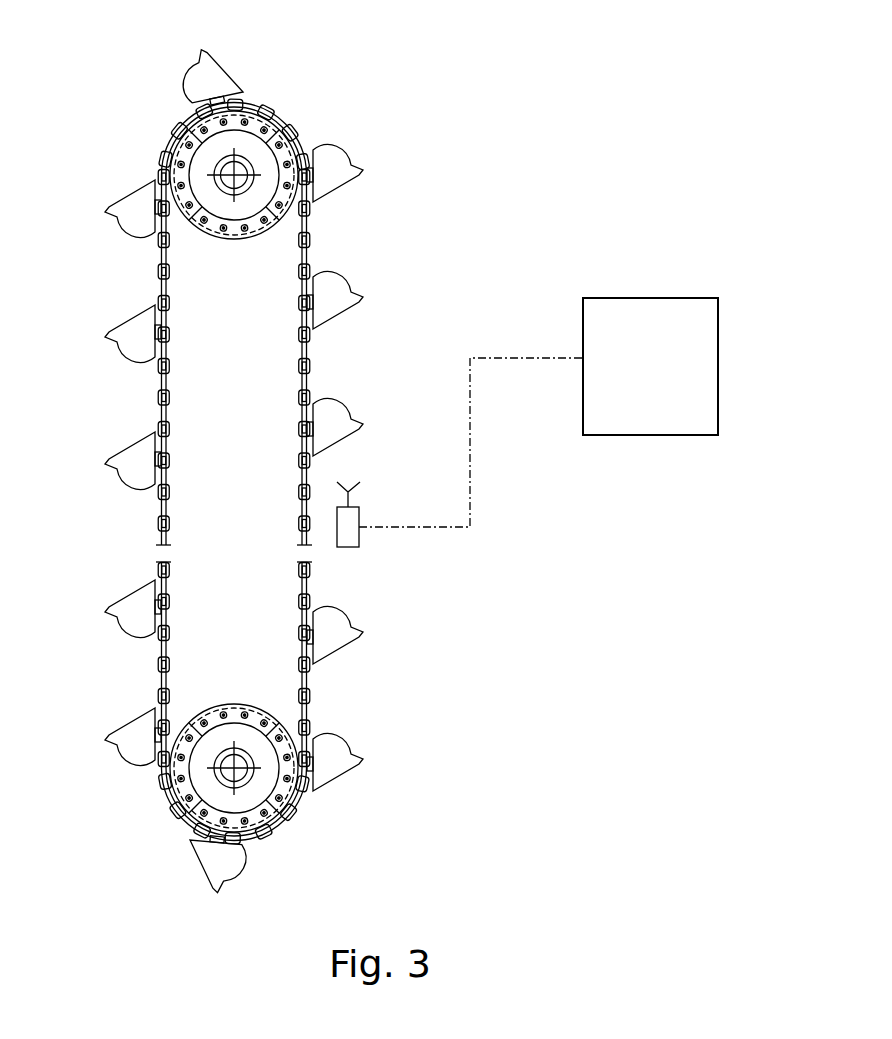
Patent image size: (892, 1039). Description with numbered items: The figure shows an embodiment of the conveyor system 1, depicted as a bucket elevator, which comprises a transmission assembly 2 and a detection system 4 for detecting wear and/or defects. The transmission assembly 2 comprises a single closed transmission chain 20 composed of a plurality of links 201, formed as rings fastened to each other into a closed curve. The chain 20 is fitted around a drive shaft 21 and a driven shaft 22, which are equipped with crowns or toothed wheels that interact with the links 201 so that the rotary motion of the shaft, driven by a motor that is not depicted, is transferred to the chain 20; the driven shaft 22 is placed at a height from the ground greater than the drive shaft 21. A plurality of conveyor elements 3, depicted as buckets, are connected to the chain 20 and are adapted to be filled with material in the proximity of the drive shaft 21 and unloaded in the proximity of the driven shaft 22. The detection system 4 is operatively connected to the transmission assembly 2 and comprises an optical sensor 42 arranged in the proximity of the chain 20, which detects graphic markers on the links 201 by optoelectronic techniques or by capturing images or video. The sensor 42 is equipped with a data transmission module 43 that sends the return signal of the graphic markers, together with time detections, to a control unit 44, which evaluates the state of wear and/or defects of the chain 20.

The conveyor system 1 is at (368, 467).
The transmission assembly 2 is at (241, 480).
The conveyor element 3 is at (120, 594).
The detection system 4 is at (527, 467).
The transmission chain 20 is at (241, 471).
The links 201 is at (316, 269).
The drive shaft 21 is at (243, 794).
The driven shaft 22 is at (243, 153).
The optical sensor 42 is at (357, 549).
The data transmission module 43 is at (363, 490).
The control unit 44 is at (638, 380).